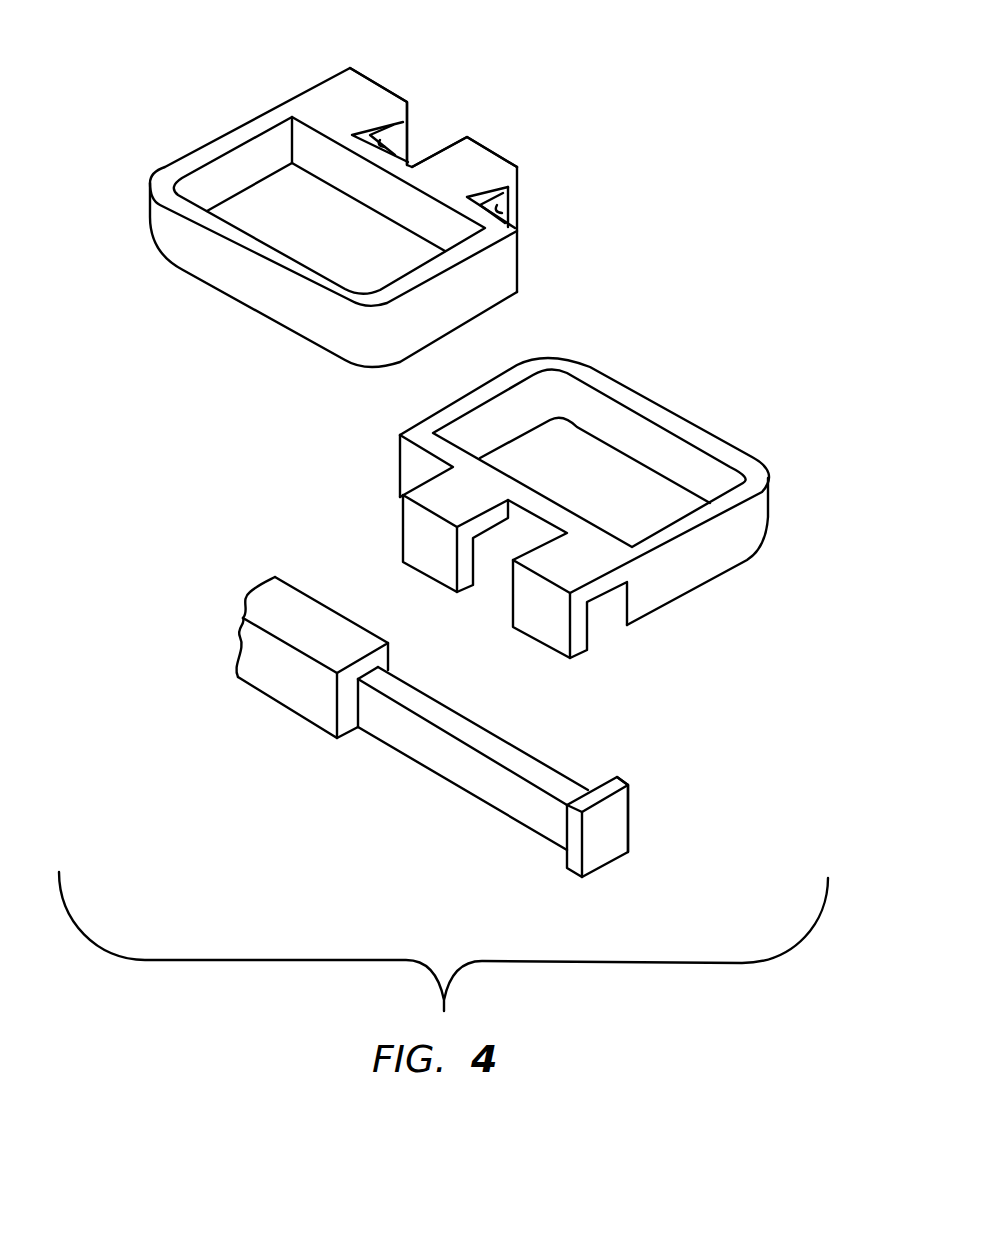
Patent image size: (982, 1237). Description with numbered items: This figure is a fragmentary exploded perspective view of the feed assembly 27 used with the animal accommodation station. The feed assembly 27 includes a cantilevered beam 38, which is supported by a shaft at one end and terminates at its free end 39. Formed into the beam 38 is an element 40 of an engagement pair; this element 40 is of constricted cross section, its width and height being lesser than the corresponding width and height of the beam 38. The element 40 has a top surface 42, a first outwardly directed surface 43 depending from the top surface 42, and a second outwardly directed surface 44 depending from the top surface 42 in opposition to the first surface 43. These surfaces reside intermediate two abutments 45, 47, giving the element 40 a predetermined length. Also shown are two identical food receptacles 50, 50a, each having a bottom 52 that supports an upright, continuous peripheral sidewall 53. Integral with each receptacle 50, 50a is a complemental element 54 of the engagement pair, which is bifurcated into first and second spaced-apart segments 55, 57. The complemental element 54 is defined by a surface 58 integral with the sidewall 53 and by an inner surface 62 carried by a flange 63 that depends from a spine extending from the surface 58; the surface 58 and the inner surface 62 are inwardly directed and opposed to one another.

The feed assembly 27 is at (425, 741).
The cantilevered beam 38 is at (290, 712).
The free end 39 is at (644, 807).
The element of engagement pair 40 is at (489, 786).
The top surface 42 is at (537, 775).
The first outwardly directed surface 43 is at (507, 807).
The second outwardly directed surface 44 is at (483, 723).
The abutment 45 is at (345, 737).
The abutment 47 is at (630, 793).
The food receptacle 50 is at (232, 137).
The food receptacle 50a is at (683, 420).
The bottom 52 is at (330, 224).
The peripheral sidewall 53 is at (218, 260).
The complemental element 54 is at (600, 625).
The first segment 55 is at (383, 86).
The second segment 57 is at (495, 153).
The surface 58 is at (413, 463).
The inner surface 62 is at (412, 141).
The flange 63 is at (413, 535).